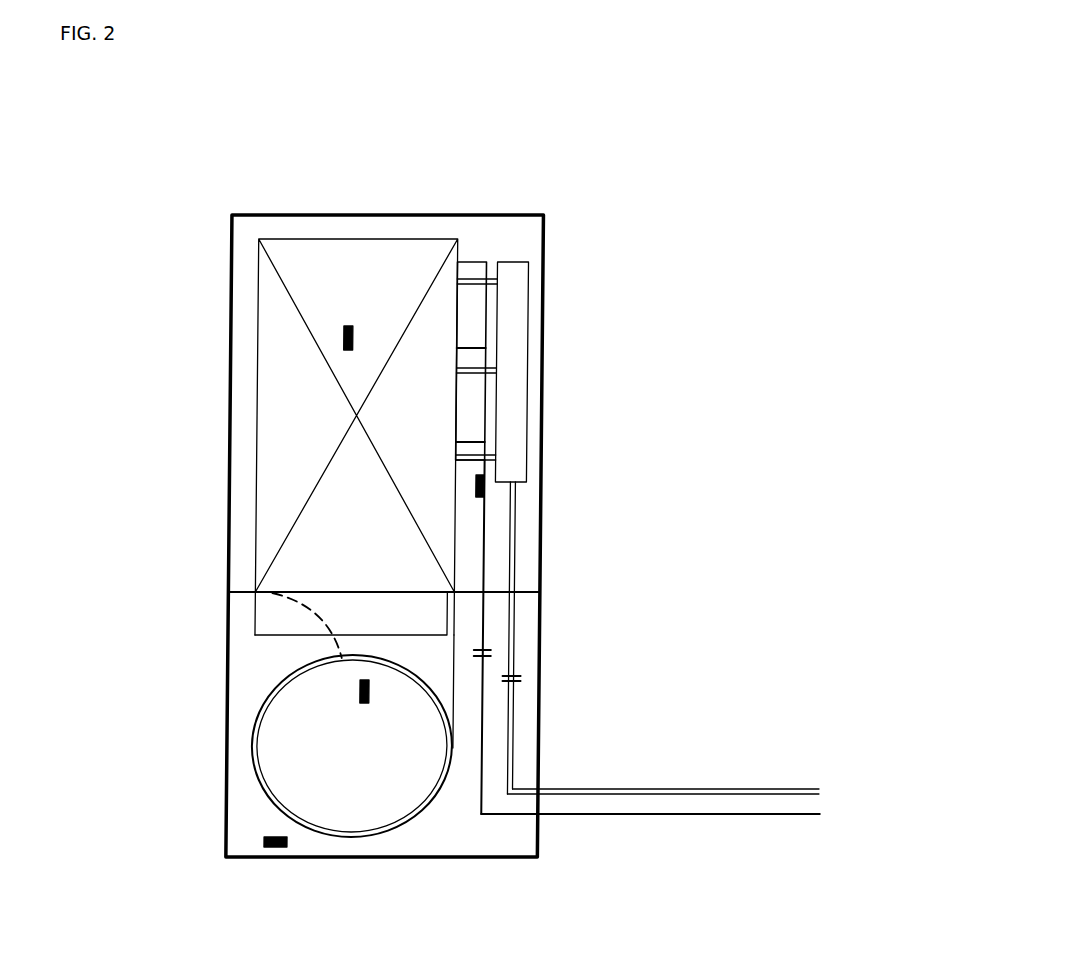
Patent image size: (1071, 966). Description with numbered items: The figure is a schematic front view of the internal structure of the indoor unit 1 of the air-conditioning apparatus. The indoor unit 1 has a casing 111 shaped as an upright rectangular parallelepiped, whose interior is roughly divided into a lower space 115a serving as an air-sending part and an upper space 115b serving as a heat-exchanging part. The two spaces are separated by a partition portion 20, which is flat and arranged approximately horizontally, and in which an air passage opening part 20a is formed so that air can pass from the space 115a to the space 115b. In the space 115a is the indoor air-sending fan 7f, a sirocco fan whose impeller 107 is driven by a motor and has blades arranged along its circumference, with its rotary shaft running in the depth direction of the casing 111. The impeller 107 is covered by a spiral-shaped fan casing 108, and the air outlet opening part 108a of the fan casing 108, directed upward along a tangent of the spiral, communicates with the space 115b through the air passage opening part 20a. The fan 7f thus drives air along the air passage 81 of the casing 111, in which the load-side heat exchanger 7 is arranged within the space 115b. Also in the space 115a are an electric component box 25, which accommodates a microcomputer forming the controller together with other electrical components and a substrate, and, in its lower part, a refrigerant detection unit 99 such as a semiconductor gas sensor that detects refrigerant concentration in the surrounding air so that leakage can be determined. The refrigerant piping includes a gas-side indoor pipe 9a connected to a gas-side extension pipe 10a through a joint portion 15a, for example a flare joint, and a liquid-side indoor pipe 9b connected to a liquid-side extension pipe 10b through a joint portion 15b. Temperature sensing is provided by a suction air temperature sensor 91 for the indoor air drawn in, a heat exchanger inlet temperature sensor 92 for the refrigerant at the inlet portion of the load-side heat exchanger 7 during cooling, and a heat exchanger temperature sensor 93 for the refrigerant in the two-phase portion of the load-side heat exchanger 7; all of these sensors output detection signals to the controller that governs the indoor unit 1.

The indoor unit 1 is at (203, 203).
The load-side heat exchanger 7 is at (258, 470).
The indoor air-sending fan 7f is at (307, 697).
The gas-side indoor pipe 9a is at (518, 522).
The liquid-side indoor pipe 9b is at (482, 512).
The gas-side extension pipe 10a is at (753, 788).
The liquid-side extension pipe 10b is at (672, 817).
The joint portion 15a is at (522, 677).
The joint portion 15b is at (492, 652).
The partition portion 20 is at (239, 589).
The air passage opening part 20a is at (343, 590).
The electric component box 25 is at (256, 627).
The air passage 81 is at (467, 573).
The suction air temperature sensor 91 is at (359, 690).
The heat exchanger inlet temperature sensor 92 is at (487, 478).
The heat exchanger temperature sensor 93 is at (344, 336).
The refrigerant detection unit 99 is at (275, 848).
The impeller 107 is at (398, 820).
The fan casing 108 is at (453, 741).
The air outlet opening part 108a is at (441, 612).
The casing 111 is at (547, 250).
The space 115a is at (257, 822).
The space 115b is at (244, 383).